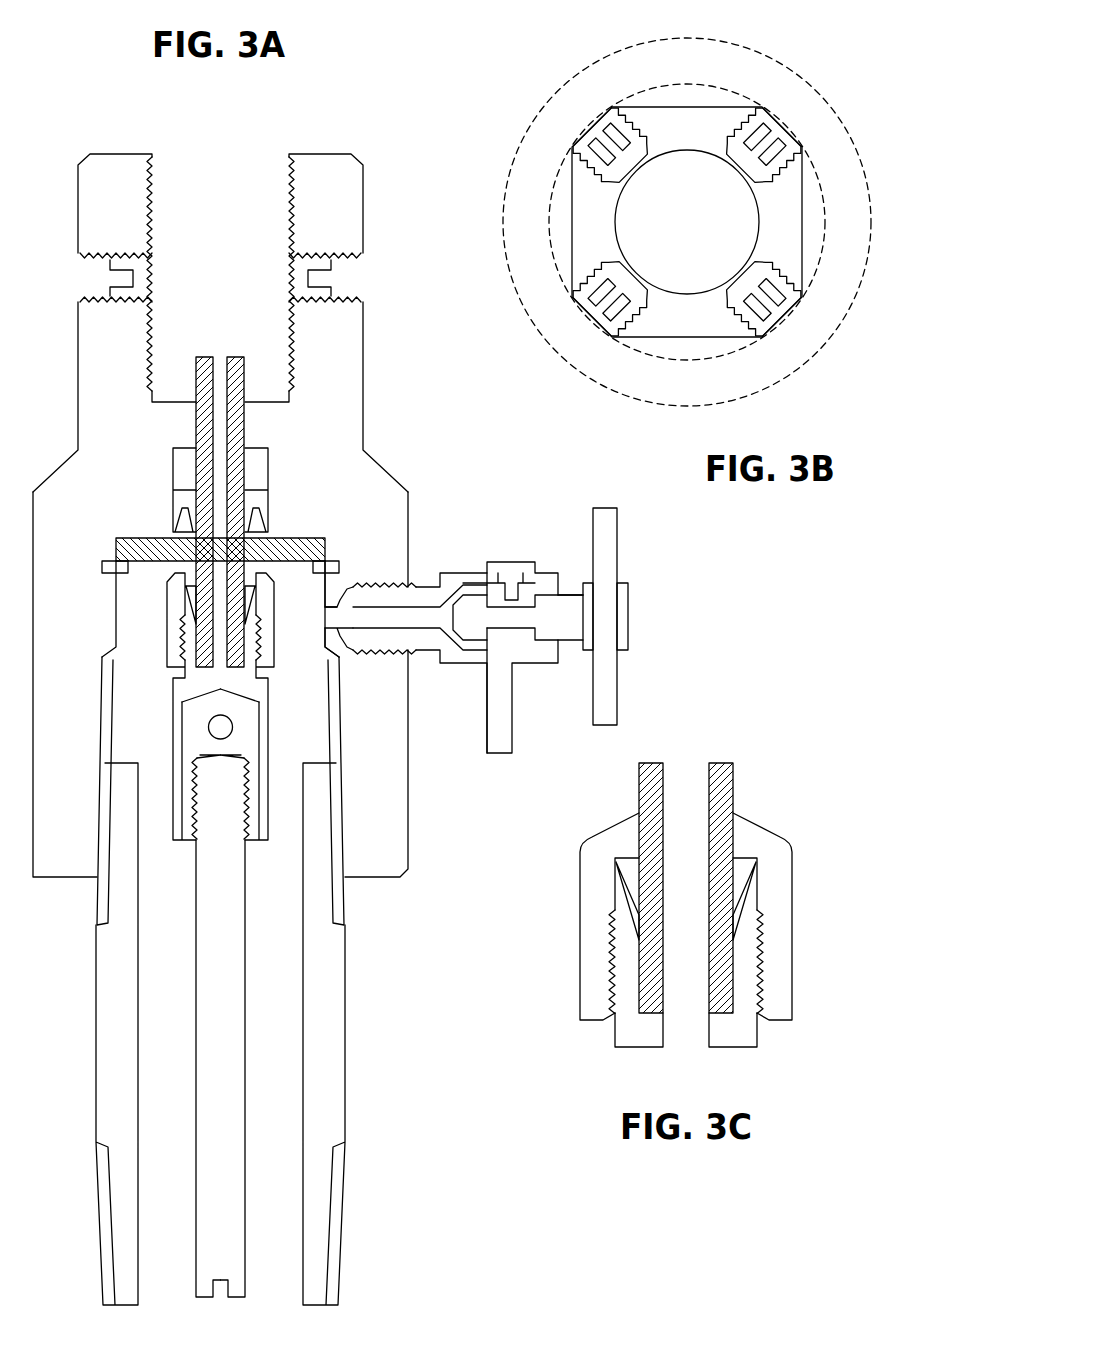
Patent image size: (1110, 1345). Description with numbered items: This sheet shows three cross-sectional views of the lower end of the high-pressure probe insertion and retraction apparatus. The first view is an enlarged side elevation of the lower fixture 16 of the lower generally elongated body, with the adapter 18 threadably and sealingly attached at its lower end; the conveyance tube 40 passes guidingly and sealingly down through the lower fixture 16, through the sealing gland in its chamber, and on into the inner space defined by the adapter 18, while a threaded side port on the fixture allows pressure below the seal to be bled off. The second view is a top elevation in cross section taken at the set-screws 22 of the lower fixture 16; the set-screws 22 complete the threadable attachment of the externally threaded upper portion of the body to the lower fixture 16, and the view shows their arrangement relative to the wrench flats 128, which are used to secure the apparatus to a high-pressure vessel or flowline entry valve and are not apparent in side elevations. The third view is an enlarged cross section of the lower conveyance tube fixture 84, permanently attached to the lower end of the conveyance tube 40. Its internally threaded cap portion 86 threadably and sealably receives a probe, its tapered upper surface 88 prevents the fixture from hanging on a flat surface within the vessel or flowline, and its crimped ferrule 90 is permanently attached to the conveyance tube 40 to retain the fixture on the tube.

In FIG. 3A, the lower fixture 16 is at (390, 425).
In FIG. 3B, the lower fixture 16 is at (832, 364).
In FIG. 3A, the adapter 18 is at (365, 1035).
In FIG. 3B, the wrench flats 128 is at (563, 197).
In FIG. 3B, the set-screws 22 is at (778, 134).
In FIG. 3C, the conveyance tube 40 is at (745, 752).
In FIG. 3C, the lower conveyance tube fixture 84 is at (702, 922).
In FIG. 3C, the internally threaded cap portion 86 is at (790, 900).
In FIG. 3C, the tapered upper surface 88 is at (778, 818).
In FIG. 3C, the crimped ferrule 90 is at (620, 877).